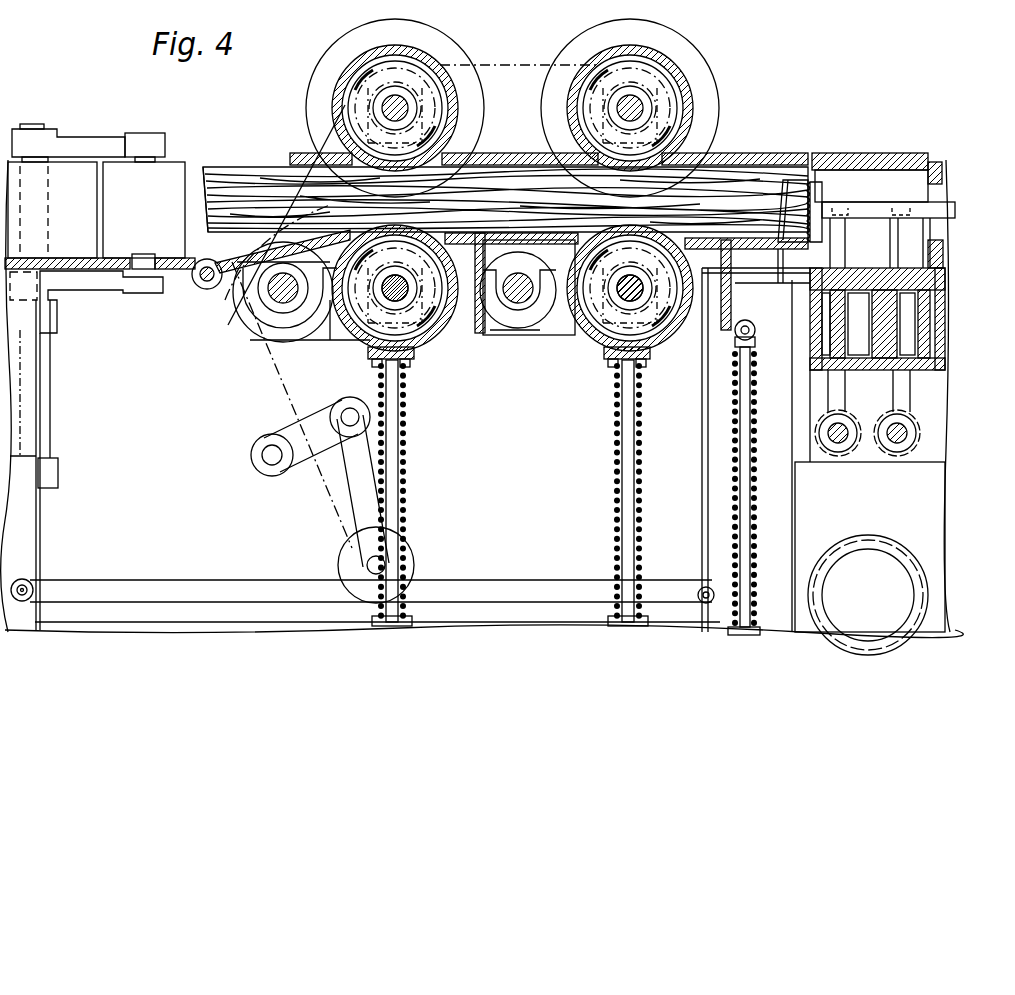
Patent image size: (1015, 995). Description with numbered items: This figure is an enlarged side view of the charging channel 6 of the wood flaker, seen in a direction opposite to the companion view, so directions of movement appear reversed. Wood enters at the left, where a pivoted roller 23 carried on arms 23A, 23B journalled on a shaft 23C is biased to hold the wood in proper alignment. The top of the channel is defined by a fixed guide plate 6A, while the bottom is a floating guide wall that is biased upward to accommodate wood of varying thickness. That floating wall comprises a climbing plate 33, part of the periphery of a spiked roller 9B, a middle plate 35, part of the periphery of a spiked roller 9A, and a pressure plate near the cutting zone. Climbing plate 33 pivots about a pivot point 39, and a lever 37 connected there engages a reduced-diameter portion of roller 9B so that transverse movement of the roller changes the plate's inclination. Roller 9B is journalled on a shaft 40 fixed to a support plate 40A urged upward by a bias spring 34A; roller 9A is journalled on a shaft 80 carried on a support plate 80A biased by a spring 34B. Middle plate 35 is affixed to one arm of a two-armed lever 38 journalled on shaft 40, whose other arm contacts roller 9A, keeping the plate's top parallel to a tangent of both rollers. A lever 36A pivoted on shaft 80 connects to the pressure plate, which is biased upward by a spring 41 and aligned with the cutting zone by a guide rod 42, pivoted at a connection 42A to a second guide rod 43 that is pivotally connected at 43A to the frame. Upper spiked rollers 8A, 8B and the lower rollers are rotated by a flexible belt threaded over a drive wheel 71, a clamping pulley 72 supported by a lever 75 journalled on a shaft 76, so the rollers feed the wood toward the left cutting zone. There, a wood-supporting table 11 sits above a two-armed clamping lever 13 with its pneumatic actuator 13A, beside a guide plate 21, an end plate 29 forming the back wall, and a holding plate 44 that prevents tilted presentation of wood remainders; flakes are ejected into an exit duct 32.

The spiked roller 8A is at (592, 58).
The spiked roller 8B is at (437, 62).
The spiked roller 9A is at (603, 322).
The spiked roller 9B is at (356, 335).
The two-armed lever 38 is at (506, 200).
The fixed guide plate 6A is at (292, 153).
The charging channel 6 is at (282, 154).
The lever 37 is at (231, 236).
The roller 23 is at (162, 190).
The arm 23A is at (88, 138).
The arm 23B is at (96, 284).
The shaft 23C is at (48, 106).
The pivot point 39 is at (198, 284).
The climbing plate 33 is at (262, 280).
The shaft 40 is at (400, 294).
The support plate 40A is at (424, 348).
The shaft 80 is at (640, 300).
The support plate 80A is at (650, 350).
The middle plate 35 is at (518, 246).
The bias spring 34A is at (406, 462).
The spring 34B is at (616, 472).
The spring 41 is at (748, 498).
The guide rod 42 is at (706, 548).
The connection 42A is at (704, 588).
The lever 36A is at (697, 328).
The second guide rod 43 is at (521, 596).
The pivotal connection 43A is at (35, 584).
The drive wheel 71 is at (345, 561).
The clamping pulley 72 is at (322, 406).
The lever 75 is at (307, 466).
The shaft 76 is at (252, 454).
The wood-supporting table 11 is at (848, 175).
The holding plate 44 is at (835, 185).
The end plate 29 is at (940, 255).
The guide plate 21 is at (878, 268).
The two-armed clamping lever 13 is at (838, 318).
The pneumatic actuator 13A is at (878, 414).
The exit duct 32 is at (892, 580).